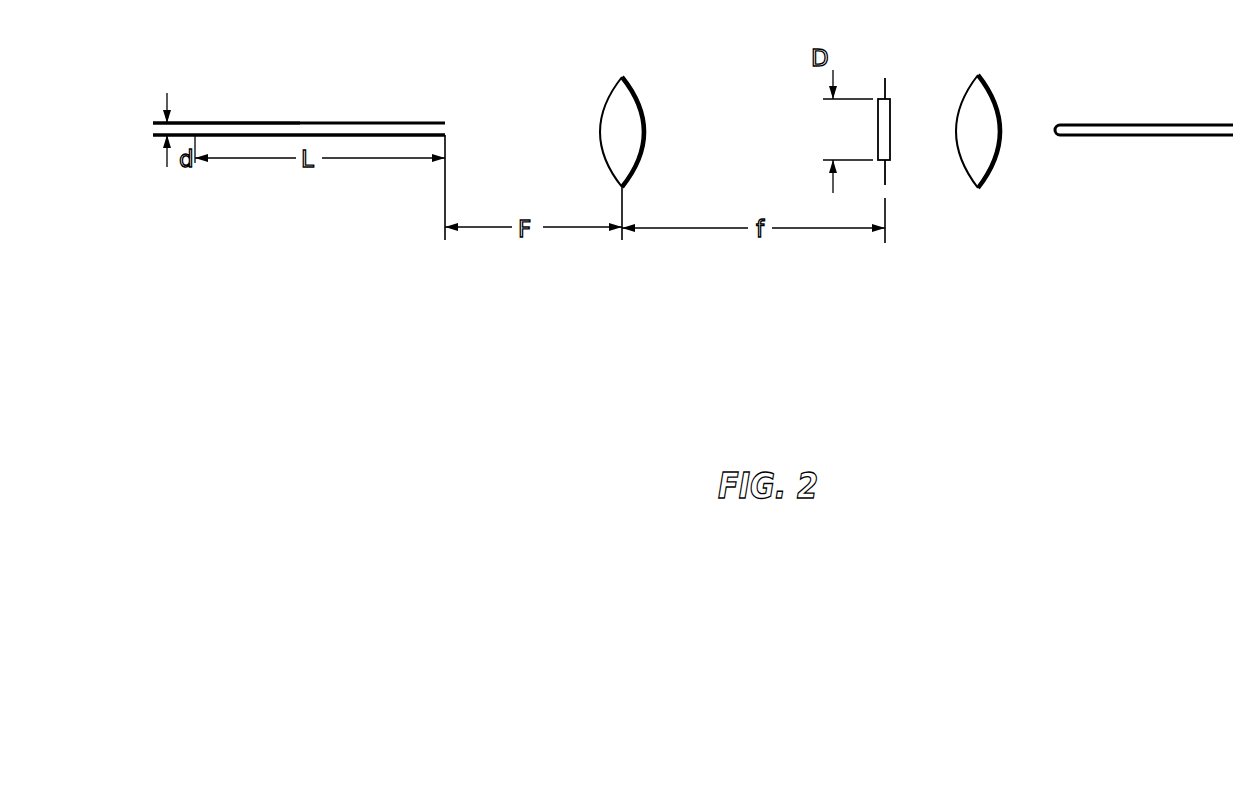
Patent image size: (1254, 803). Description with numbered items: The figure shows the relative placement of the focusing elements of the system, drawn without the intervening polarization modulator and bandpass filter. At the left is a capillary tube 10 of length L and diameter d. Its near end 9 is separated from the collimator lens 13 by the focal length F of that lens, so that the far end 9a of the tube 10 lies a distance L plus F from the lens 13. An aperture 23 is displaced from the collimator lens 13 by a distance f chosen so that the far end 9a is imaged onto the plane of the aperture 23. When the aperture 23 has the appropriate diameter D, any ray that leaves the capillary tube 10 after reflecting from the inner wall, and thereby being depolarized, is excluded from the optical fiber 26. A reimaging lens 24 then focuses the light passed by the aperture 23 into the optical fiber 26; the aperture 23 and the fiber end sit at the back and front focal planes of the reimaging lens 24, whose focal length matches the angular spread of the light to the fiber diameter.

The near end 9 is at (449, 123).
The far end 9a is at (176, 123).
The capillary tube 10 is at (294, 123).
The collimator lens 13 is at (627, 79).
The aperture 23 is at (889, 99).
The reimaging lens 24 is at (984, 79).
The optical fiber 26 is at (1150, 130).